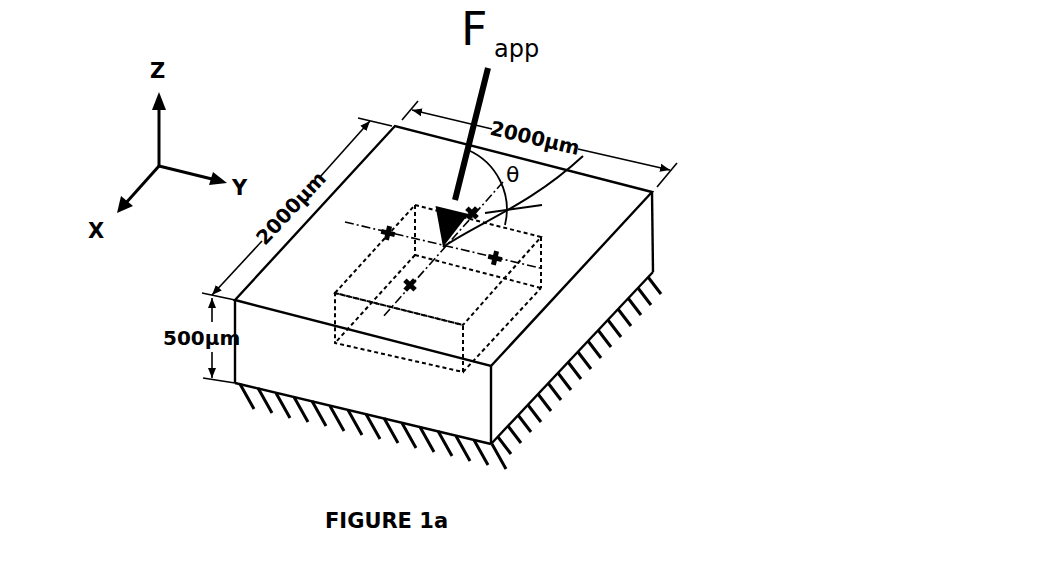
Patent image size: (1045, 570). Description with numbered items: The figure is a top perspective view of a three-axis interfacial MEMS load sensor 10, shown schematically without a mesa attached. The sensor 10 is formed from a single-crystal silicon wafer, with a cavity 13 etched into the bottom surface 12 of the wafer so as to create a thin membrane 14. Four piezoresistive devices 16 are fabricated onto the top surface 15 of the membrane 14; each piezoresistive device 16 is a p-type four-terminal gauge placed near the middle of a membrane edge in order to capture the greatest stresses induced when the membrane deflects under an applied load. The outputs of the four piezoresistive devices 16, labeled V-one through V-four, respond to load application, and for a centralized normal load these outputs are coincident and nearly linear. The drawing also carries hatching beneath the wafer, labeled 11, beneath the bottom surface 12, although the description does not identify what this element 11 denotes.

The load sensor 10 is at (725, 62).
The support base / ground 11 is at (610, 352).
The bottom surface 12 is at (641, 280).
The cavity 13 is at (423, 330).
The membrane 14 is at (425, 232).
The top surface 15 is at (476, 290).
The piezoresistive devices 16 is at (513, 248).